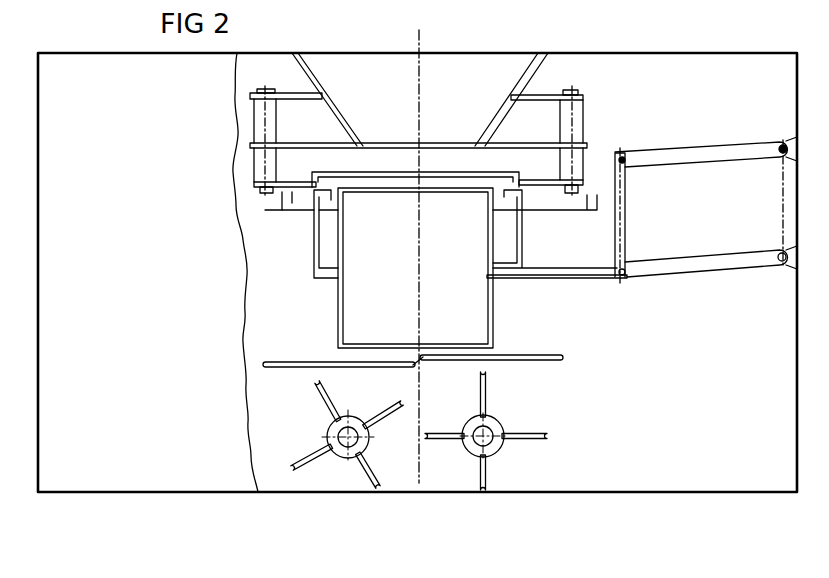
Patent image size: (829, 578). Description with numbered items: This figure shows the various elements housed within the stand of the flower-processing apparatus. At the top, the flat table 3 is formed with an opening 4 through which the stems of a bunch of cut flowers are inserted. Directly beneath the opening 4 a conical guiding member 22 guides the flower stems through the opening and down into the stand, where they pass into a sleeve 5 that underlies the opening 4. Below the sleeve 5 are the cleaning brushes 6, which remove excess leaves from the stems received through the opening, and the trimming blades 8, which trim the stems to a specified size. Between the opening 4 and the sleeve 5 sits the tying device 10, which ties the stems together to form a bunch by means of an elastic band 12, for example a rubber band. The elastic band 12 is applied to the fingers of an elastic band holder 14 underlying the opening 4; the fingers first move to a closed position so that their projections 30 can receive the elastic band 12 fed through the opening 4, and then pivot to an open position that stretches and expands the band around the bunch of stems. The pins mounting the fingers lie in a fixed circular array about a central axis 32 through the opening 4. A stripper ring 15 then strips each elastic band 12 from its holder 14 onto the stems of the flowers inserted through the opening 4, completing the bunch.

The flat table 3 is at (578, 52).
The opening 4 is at (478, 52).
The sleeve 5 is at (338, 300).
The cleaning brushes 6 is at (321, 402).
The trimming blades 8 is at (311, 361).
The tying device 10 is at (258, 208).
The elastic band 12 is at (312, 172).
The elastic band holder 14 is at (262, 186).
The stripper ring 15 is at (330, 201).
The conical guiding member 22 is at (323, 75).
The projections 30 is at (329, 171).
The central axis 32 is at (287, 181).